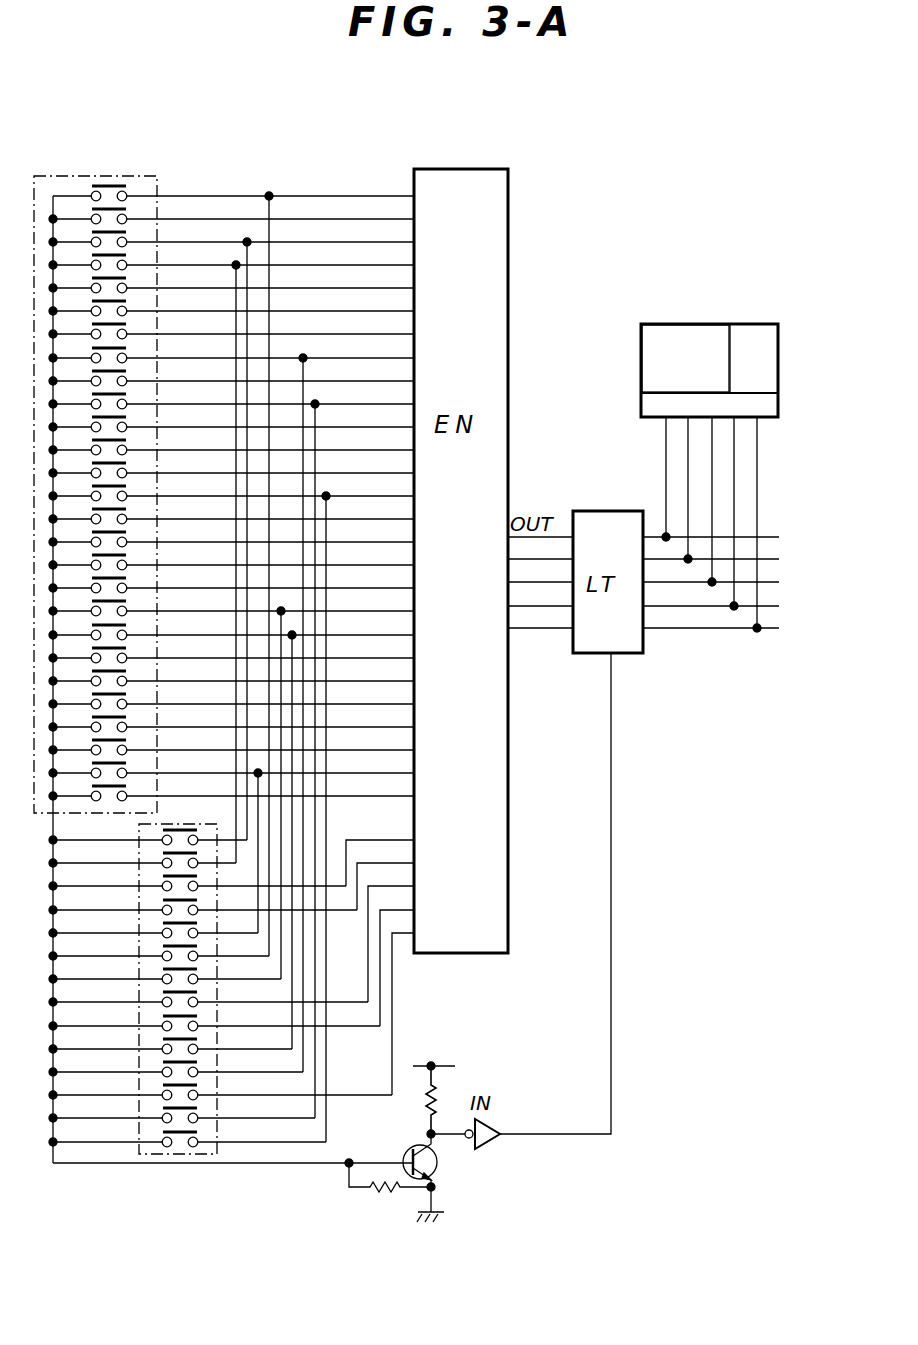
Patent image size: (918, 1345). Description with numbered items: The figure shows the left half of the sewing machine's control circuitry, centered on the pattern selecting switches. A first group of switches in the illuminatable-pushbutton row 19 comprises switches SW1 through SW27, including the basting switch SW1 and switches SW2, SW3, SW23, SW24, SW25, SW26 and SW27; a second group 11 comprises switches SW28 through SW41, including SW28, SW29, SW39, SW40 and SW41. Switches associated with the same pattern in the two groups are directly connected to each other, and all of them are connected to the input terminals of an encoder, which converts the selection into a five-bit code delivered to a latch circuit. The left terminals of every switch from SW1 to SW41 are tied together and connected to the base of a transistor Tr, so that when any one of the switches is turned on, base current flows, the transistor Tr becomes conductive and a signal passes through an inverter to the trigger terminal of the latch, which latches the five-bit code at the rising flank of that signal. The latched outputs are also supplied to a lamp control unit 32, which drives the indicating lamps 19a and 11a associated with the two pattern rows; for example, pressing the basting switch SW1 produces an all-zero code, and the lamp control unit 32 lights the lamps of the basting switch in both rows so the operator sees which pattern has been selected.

The illuminatable-pushbutton row 19 is at (62, 176).
The pattern selecting switch group 11 is at (159, 1156).
The stitch type selecting switch SW1 is at (108, 186).
The pattern selecting switch SW2 is at (126, 209).
The pattern selecting switch SW3 is at (126, 232).
The pattern selecting switch SW23 is at (126, 694).
The pattern selecting switch SW24 is at (126, 717).
The pattern selecting switch SW25 is at (126, 740).
The pattern selecting switch SW26 is at (126, 763).
The pattern selecting switch SW27 is at (126, 786).
The pattern selecting switch SW28 is at (162, 830).
The pattern selecting switch SW29 is at (162, 853).
The pattern selecting switch SW39 is at (197, 1085).
The pattern selecting switch SW40 is at (197, 1108).
The pattern selecting switch SW41 is at (197, 1132).
The indicating lamps 19a is at (668, 340).
The indicating lamps 11a is at (743, 335).
The lamp control unit 32 is at (641, 405).
The transistor Tr is at (393, 1160).